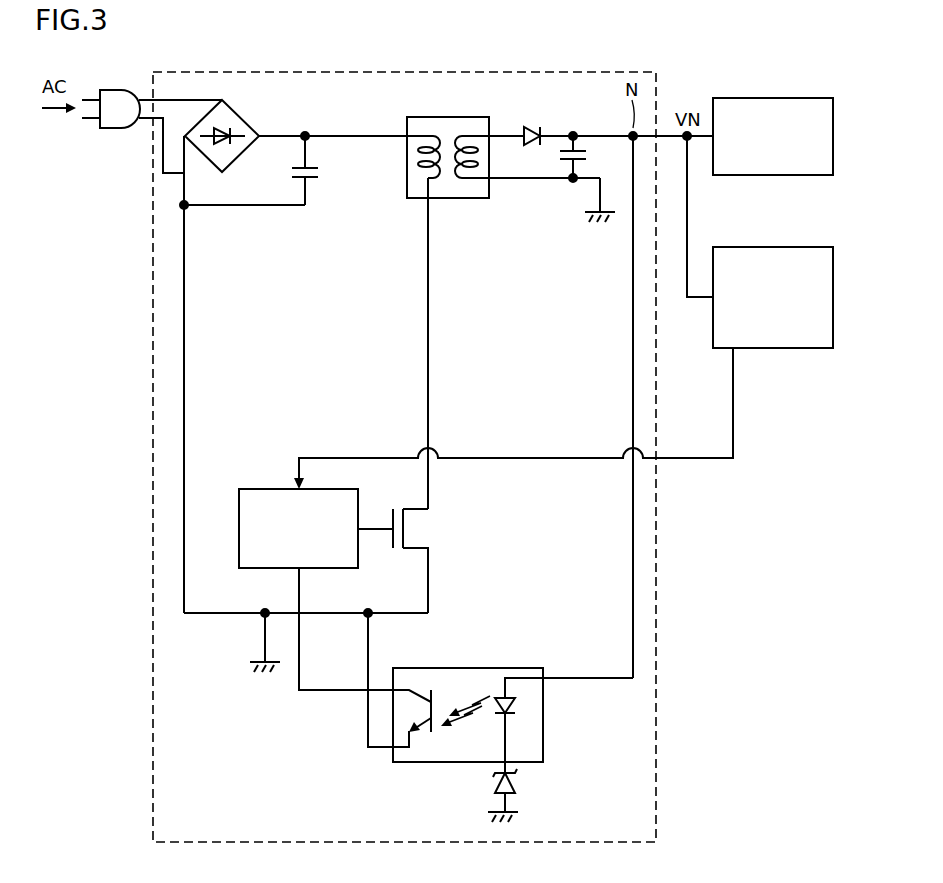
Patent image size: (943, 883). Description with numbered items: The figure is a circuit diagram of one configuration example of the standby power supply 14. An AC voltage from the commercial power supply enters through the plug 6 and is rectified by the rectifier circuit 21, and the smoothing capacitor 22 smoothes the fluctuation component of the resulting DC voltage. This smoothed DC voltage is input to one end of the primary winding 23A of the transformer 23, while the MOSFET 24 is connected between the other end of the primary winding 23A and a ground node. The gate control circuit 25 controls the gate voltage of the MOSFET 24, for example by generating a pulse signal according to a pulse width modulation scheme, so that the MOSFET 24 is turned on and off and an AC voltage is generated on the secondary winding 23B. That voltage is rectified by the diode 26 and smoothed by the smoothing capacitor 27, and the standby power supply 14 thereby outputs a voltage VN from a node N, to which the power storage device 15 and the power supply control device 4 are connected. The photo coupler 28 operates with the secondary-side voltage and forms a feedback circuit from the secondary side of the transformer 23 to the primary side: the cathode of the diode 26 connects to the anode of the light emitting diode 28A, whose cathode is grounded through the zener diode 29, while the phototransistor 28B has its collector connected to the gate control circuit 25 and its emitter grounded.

The power supply control device 4 is at (793, 247).
The plug 6 is at (115, 89).
The standby power supply 14 is at (393, 72).
The power storage device 15 is at (792, 98).
The rectifier circuit 21 is at (242, 117).
The smoothing capacitor 22 is at (318, 168).
The transformer 23 is at (449, 163).
The primary winding 23A is at (423, 160).
The secondary winding 23B is at (485, 162).
The MOSFET 24 is at (413, 553).
The gate control circuit 25 is at (254, 489).
The diode 26 is at (538, 124).
The smoothing capacitor 27 is at (560, 155).
The photo coupler 28 is at (498, 717).
The light emitting diode 28A is at (515, 708).
The phototransistor 28B is at (440, 730).
The zener diode 29 is at (515, 782).